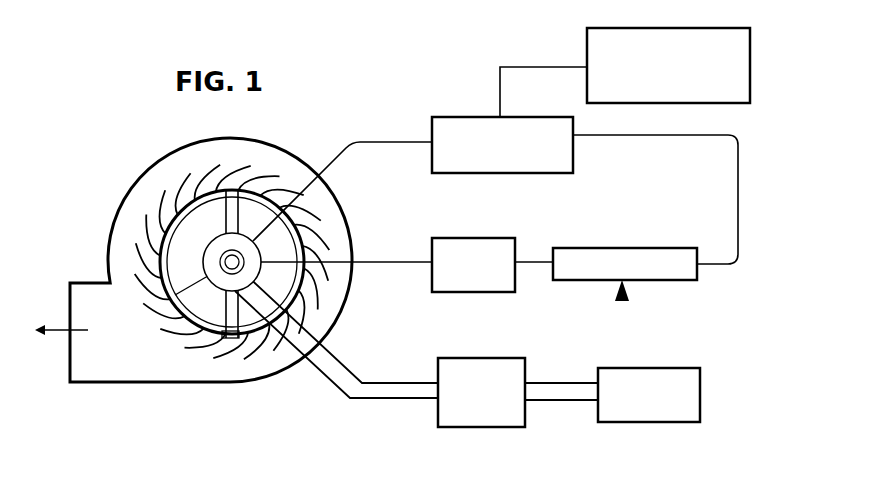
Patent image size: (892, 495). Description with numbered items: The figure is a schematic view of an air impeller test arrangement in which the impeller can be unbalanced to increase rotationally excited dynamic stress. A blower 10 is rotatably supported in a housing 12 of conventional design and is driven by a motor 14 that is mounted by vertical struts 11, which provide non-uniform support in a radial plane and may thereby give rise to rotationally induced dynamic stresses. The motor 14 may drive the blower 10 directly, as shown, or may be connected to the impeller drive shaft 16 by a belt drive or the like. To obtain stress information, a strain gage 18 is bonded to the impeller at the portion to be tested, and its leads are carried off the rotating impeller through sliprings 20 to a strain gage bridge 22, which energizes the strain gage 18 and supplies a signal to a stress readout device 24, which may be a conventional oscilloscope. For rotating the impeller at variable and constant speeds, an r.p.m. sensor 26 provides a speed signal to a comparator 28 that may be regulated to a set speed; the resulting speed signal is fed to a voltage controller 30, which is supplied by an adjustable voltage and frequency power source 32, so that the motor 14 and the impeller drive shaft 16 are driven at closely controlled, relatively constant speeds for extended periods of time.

The blower 10 is at (222, 268).
The vertical struts 11 is at (207, 207).
The housing 12 is at (137, 180).
The motor 14 is at (170, 307).
The impeller drive shaft 16 is at (216, 255).
The strain gage 18 is at (228, 336).
The sliprings 20 is at (210, 261).
The strain gage bridge 22 is at (440, 427).
The stress readout device 24 is at (657, 422).
The r.p.m. sensor 26 is at (513, 212).
The comparator 28 is at (695, 216).
The voltage controller 30 is at (573, 165).
The adjustable voltage and frequency power source 32 is at (712, 0).